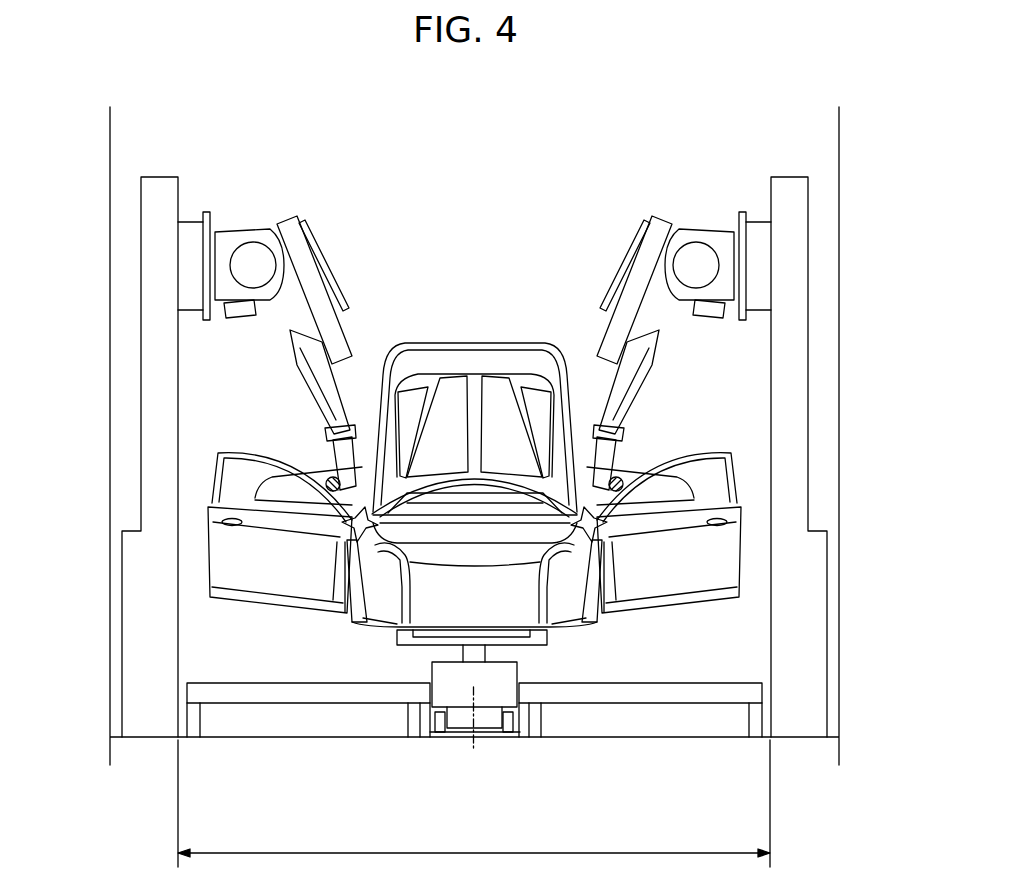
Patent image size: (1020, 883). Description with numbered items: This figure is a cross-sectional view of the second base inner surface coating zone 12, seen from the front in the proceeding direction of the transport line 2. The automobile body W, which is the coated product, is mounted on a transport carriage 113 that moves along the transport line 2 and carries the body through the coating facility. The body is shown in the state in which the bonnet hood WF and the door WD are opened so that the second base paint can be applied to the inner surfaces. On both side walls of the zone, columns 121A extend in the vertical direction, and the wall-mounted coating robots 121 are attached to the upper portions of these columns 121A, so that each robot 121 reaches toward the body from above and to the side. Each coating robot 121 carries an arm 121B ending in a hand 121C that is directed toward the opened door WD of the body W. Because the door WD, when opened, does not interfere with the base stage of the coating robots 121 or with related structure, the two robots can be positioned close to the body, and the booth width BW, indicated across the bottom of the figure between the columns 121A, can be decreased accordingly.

The second base inner surface coating zone 12 is at (727, 134).
The coating robot 121 is at (282, 226).
The column 121A is at (157, 392).
The robot arm 121B is at (317, 373).
The robot hand / tool 121C is at (327, 477).
The transport carriage 113 is at (463, 698).
The transport line 2 is at (477, 720).
The automobile body W is at (429, 292).
The bonnet hood WF is at (510, 347).
The door WD is at (270, 578).
The booth width BW is at (474, 811).